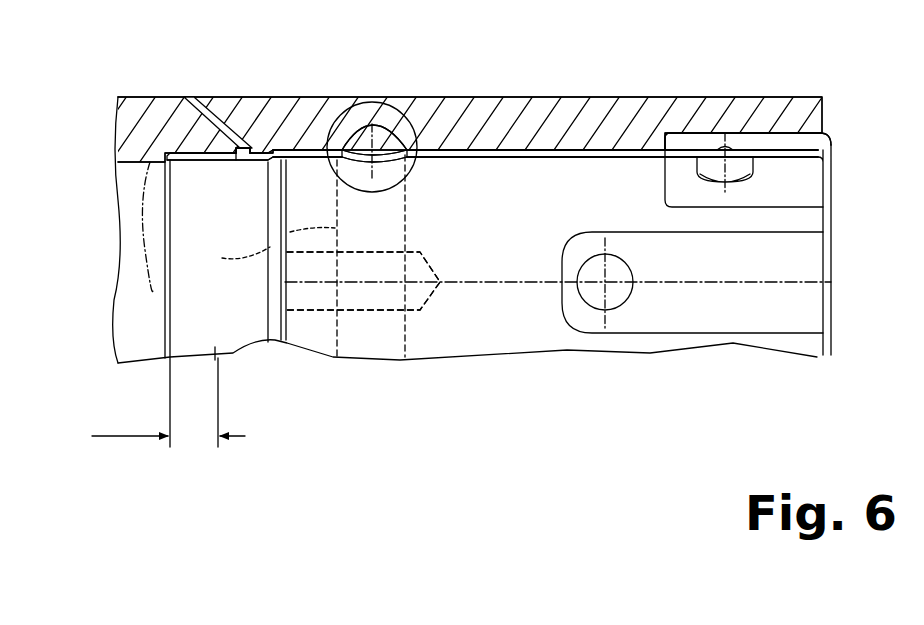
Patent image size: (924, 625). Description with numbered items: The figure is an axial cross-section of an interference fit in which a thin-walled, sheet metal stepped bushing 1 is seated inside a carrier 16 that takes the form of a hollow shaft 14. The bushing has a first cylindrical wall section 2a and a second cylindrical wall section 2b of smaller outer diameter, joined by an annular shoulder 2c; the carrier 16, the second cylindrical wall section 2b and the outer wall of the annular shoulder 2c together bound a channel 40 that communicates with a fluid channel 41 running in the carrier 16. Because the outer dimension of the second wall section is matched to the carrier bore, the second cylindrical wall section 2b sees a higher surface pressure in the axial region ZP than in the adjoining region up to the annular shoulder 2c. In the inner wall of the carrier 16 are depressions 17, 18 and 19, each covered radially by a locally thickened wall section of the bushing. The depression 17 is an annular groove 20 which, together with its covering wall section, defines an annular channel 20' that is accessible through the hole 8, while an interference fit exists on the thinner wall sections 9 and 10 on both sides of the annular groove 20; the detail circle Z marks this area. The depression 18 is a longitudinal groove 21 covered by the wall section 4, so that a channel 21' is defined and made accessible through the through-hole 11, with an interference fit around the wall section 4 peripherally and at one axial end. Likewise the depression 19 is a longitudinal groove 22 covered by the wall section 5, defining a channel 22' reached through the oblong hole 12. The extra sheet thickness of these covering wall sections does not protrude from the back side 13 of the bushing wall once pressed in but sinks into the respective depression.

The stepped bushing 1 is at (547, 172).
The first cylindrical wall section 2a is at (477, 147).
The second cylindrical wall section 2b is at (188, 270).
The annular shoulder 2c is at (277, 338).
The wall section 4 is at (790, 332).
The wall section 5 is at (780, 205).
The hole 8 is at (350, 157).
The wall section 9 is at (250, 143).
The wall section 10 is at (477, 147).
The through-hole 11 is at (617, 297).
The oblong hole 12 is at (827, 142).
The back side 13 is at (508, 160).
The hollow shaft 14 is at (625, 125).
The carrier 16 is at (625, 125).
The depression 17 is at (355, 135).
The depression 18 is at (770, 250).
The depression 19 is at (740, 140).
The annular groove 20 is at (338, 103).
The annular channel 20' is at (338, 109).
The longitudinal groove 21 is at (551, 285).
The channel 21' is at (598, 281).
The longitudinal groove 22 is at (749, 103).
The channel 22' is at (749, 103).
The channel 40 is at (255, 146).
The fluid channel 41 is at (207, 97).
The detail circle Z is at (380, 103).
The axial region ZP is at (168, 419).